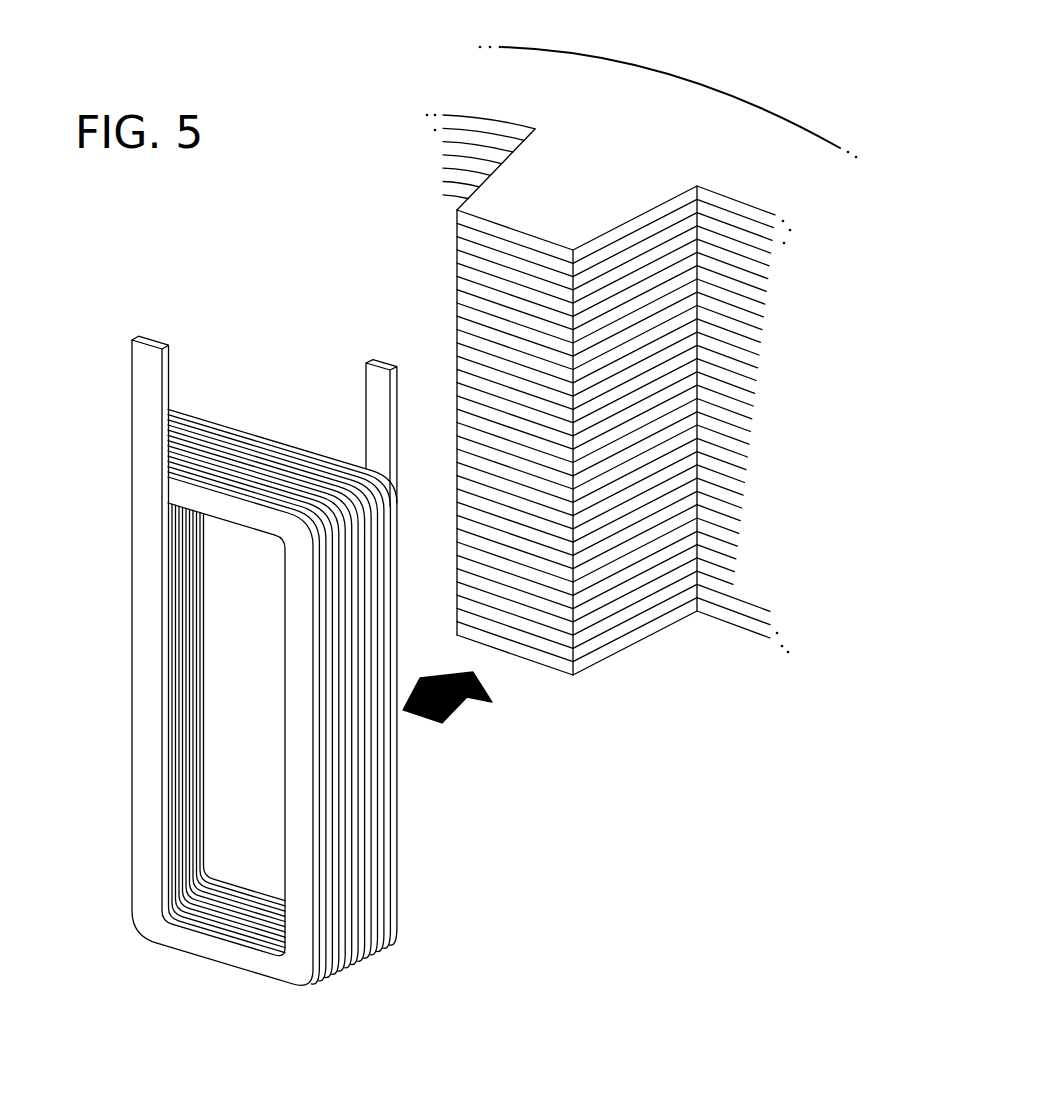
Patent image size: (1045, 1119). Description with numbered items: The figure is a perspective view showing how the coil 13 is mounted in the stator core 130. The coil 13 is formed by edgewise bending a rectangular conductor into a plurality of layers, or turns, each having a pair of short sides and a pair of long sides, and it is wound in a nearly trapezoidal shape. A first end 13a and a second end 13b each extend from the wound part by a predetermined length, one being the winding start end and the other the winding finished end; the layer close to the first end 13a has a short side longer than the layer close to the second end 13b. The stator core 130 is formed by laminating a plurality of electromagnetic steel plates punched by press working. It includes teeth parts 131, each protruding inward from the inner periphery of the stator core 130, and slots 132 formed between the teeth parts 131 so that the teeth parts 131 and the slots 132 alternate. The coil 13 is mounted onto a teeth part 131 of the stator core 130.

The coil 13 is at (226, 344).
The first end 13a is at (377, 372).
The second end 13b is at (140, 372).
The stator core 130 is at (682, 94).
The teeth part 131 is at (513, 218).
The slot 132 is at (640, 235).